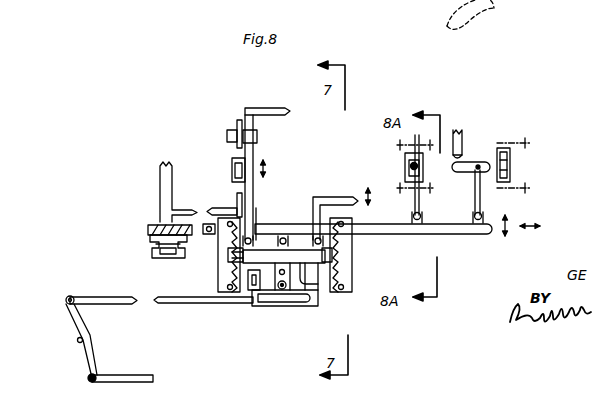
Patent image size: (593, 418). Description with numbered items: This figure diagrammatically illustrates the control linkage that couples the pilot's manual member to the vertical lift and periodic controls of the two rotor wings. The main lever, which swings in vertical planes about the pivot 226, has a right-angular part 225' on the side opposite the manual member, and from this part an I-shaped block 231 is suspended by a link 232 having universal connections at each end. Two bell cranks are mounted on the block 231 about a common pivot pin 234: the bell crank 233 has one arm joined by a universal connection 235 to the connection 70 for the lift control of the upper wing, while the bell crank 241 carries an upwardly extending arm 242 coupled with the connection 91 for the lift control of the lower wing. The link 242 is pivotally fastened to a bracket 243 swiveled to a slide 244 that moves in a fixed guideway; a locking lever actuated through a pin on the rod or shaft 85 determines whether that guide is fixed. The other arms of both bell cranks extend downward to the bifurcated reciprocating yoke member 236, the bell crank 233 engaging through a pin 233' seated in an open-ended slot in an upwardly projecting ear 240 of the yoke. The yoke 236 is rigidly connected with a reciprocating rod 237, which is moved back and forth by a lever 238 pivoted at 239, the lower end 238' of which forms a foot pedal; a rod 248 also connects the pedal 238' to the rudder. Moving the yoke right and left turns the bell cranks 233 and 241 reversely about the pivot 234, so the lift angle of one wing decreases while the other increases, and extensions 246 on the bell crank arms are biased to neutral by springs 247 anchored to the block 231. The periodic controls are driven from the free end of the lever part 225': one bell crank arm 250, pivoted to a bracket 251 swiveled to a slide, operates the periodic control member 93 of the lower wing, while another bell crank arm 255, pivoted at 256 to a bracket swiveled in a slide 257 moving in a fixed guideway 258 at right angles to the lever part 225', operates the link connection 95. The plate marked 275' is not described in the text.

The connection 70 is at (348, 198).
The rod or shaft 85 is at (160, 178).
The connection 91 is at (254, 108).
The periodic control member 93 is at (415, 140).
The link connection 95 is at (462, 135).
The right-angular part of the lever 225' is at (376, 237).
The pivot 226 is at (152, 235).
The I-shaped block 231 is at (325, 284).
The link 232 is at (285, 228).
The bell crank 233 is at (303, 295).
The pin 233' is at (287, 298).
The pivot pin 234 is at (282, 290).
The universal connection 235 is at (299, 194).
The bifurcated reciprocating yoke member 236 is at (299, 306).
The reciprocating rod 237 is at (102, 304).
The lever 238 is at (62, 337).
The foot pedal 238' is at (65, 373).
The pivot 239 is at (76, 350).
The ear 240 is at (251, 290).
The bell crank 241 is at (262, 250).
The arm or link 242 is at (258, 146).
The bracket 243 is at (232, 163).
The slide 244 is at (235, 177).
The extensions 246 is at (230, 256).
The spring 247 is at (230, 226).
The rod 248 is at (113, 362).
The bell crank arm 250 is at (419, 195).
The bracket 251 is at (405, 172).
The bell crank arm 255 is at (481, 195).
The pivot 256 is at (480, 165).
The slide 257 is at (510, 156).
The fixed guideway 258 is at (510, 178).
The plate 275' is at (203, 317).